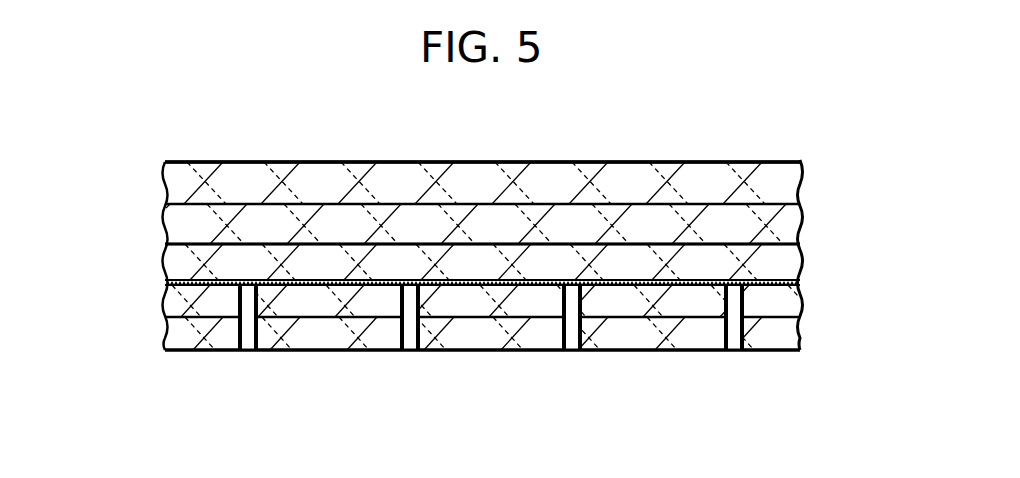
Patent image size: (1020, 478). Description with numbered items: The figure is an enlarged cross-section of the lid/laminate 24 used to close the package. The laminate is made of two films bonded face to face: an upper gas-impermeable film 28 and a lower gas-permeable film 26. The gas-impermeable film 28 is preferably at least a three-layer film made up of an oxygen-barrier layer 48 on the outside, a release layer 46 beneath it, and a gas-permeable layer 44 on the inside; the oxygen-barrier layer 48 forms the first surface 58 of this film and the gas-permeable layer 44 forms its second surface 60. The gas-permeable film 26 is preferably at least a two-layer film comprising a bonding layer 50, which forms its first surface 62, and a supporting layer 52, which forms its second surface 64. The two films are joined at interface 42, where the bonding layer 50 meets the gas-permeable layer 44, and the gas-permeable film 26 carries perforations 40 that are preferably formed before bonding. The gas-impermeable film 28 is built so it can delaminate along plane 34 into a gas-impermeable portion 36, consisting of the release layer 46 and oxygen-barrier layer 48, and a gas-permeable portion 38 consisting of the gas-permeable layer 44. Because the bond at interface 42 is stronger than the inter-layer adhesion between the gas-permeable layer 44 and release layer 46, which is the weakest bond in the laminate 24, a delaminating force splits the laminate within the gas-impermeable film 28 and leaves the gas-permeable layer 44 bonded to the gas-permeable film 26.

The lid/laminate 24 is at (707, 130).
The gas-permeable film 26 is at (812, 282).
The gas-impermeable film 28 is at (872, 160).
The plane 34 is at (160, 240).
The gas-impermeable portion 36 is at (812, 160).
The gas-permeable portion 38 is at (812, 243).
The perforations 40 is at (258, 322).
The interface 42 is at (158, 282).
The gas-permeable layer 44 is at (165, 263).
The release layer 46 is at (166, 218).
The oxygen-barrier layer 48 is at (165, 180).
The bonding layer 50 is at (165, 300).
The supporting layer 52 is at (165, 334).
The first surface 58 is at (286, 162).
The second surface 60 is at (647, 282).
The first surface 62 is at (450, 282).
The second surface 64 is at (533, 349).